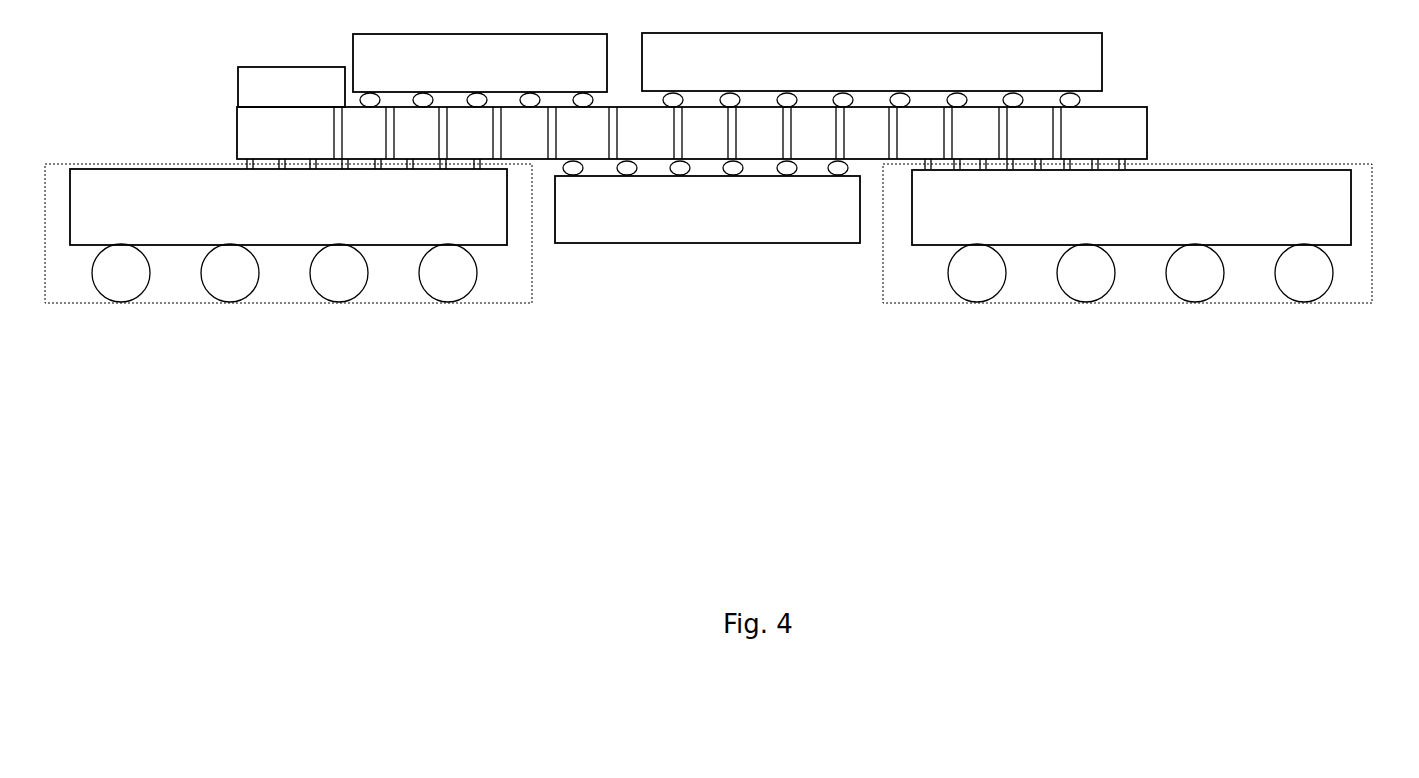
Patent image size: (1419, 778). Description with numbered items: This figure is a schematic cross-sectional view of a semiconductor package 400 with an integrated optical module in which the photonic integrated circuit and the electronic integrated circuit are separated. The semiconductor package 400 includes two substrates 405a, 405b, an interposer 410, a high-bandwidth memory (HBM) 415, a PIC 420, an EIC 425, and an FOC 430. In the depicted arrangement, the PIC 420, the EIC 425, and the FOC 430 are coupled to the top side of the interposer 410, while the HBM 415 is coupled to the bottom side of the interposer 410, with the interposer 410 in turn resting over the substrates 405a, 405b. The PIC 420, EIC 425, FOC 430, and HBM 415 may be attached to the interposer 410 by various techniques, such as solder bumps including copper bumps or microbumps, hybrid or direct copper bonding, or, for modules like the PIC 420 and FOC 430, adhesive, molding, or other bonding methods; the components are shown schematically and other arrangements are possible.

The semiconductor package 400 is at (719, 348).
The substrate 405a is at (288, 233).
The substrate 405b is at (1127, 233).
The interposer 410 is at (228, 109).
The high-bandwidth memory (HBM) 415 is at (707, 202).
The photonic integrated circuit (PIC) 420 is at (480, 70).
The electronic integrated circuit (EIC) 425 is at (872, 70).
The fiber optic connector (FOC) 430 is at (291, 87).